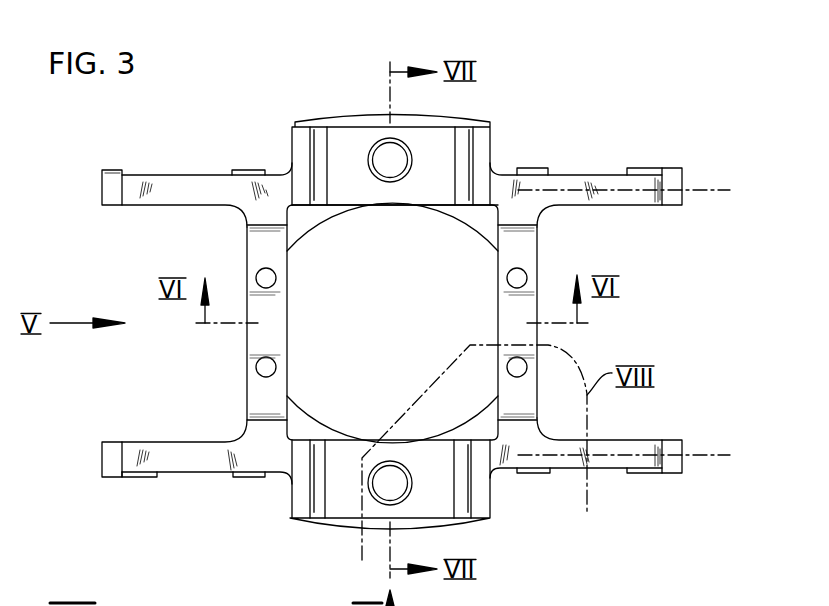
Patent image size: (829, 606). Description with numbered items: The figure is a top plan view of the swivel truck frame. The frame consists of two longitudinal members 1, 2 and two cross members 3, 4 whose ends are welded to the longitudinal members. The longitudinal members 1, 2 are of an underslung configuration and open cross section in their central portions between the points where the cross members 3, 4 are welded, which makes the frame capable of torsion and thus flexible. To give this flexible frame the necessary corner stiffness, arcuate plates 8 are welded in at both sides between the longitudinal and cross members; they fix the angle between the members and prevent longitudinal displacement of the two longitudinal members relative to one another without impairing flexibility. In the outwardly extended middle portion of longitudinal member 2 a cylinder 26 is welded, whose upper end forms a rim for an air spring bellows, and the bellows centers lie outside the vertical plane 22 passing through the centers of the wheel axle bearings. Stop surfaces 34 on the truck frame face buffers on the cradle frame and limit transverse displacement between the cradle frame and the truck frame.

The longitudinal member 1 is at (179, 188).
The longitudinal member 2 is at (190, 458).
The cross member 3 is at (525, 252).
The cross member 4 is at (258, 392).
The arcuate plate 8 is at (477, 220).
The vertical plane 22 is at (708, 191).
The cylinder 26 is at (377, 142).
The stop surface 34 is at (316, 207).